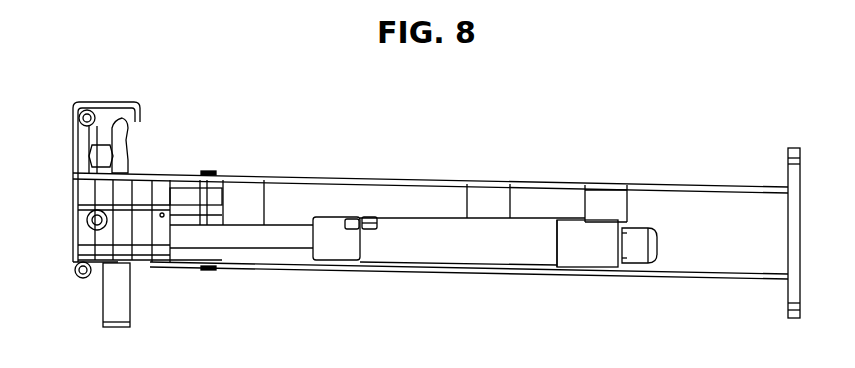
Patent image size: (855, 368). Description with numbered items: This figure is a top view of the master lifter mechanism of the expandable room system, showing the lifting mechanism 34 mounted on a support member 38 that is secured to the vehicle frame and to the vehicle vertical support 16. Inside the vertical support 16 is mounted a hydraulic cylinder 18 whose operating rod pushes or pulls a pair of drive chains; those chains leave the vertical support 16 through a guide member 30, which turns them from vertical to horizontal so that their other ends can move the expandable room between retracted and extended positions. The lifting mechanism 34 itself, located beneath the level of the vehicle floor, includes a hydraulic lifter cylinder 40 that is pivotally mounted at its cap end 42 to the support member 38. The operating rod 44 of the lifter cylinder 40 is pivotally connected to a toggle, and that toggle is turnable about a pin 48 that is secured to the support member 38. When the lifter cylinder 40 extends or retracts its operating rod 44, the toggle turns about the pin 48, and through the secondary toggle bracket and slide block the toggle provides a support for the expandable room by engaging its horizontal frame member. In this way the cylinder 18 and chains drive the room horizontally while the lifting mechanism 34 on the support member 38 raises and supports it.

The vehicle vertical support 16 is at (130, 98).
The hydraulic cylinder 18 is at (125, 142).
The guide member 30 is at (72, 253).
The lifting mechanism 34 is at (150, 273).
The support member 38 is at (532, 175).
The hydraulic lifter cylinder 40 is at (458, 248).
The cap end 42 is at (617, 262).
The operating rod 44 is at (282, 237).
The pin 48 is at (206, 170).